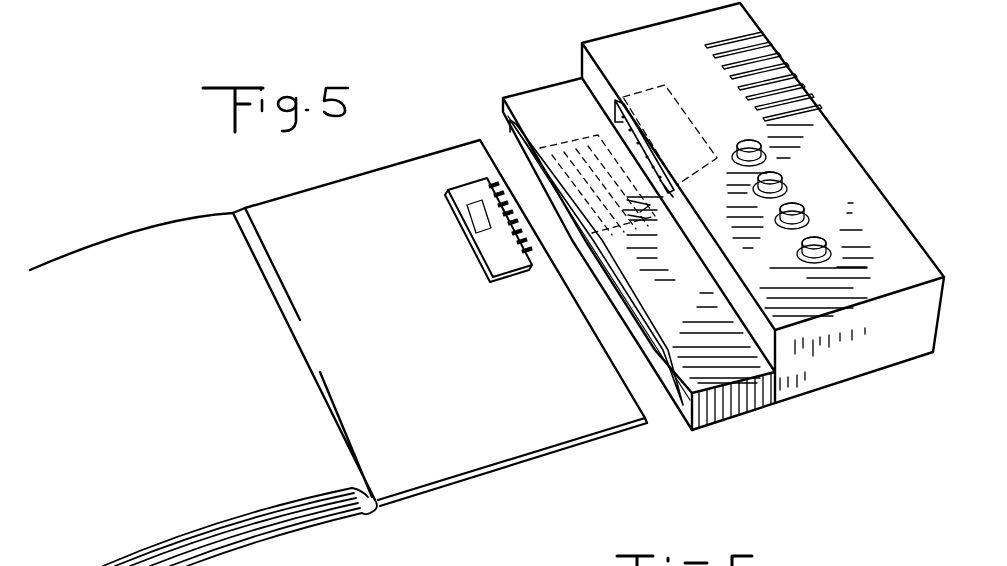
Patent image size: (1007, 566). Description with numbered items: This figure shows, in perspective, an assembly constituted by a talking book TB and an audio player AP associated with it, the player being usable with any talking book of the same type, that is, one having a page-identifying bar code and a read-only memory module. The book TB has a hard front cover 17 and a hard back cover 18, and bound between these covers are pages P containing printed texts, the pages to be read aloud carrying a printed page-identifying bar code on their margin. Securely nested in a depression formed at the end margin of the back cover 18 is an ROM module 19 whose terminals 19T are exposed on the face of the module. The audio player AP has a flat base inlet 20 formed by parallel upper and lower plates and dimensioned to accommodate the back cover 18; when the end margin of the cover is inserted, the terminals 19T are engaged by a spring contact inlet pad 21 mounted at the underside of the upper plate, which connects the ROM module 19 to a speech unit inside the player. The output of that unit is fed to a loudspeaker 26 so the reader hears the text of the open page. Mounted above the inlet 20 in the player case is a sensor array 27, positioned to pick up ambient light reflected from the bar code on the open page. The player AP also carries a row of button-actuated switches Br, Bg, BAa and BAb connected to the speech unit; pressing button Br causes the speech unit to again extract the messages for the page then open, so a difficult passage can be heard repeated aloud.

The hard front cover 17 is at (293, 530).
The hard back cover 18 is at (545, 455).
The ROM module 19 is at (457, 214).
The ROM module terminals 19T is at (520, 262).
The flat base inlet 20 is at (723, 413).
The spring contact inlet pad 21 is at (567, 147).
The loudspeaker 26 is at (768, 50).
The sensor array 27 is at (652, 95).
The pages P is at (170, 243).
The talking book TB is at (281, 190).
The audio player AP is at (542, 82).
The repeat button switch Br is at (749, 145).
The button-actuated switch Bg is at (778, 178).
The button-actuated switch BAa is at (819, 200).
The button-actuated switch BAb is at (805, 244).